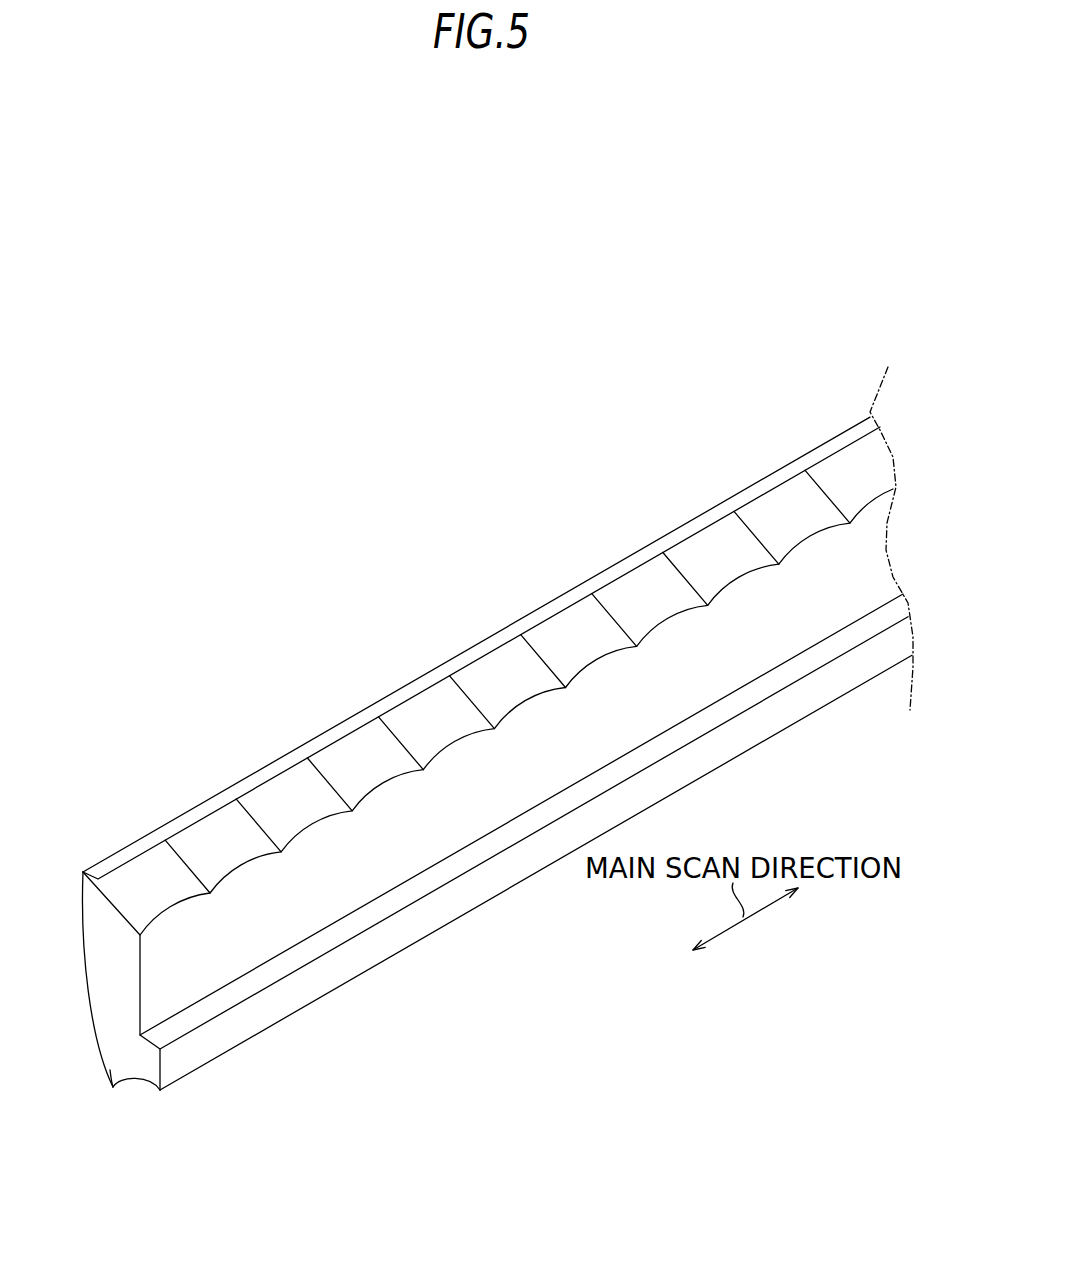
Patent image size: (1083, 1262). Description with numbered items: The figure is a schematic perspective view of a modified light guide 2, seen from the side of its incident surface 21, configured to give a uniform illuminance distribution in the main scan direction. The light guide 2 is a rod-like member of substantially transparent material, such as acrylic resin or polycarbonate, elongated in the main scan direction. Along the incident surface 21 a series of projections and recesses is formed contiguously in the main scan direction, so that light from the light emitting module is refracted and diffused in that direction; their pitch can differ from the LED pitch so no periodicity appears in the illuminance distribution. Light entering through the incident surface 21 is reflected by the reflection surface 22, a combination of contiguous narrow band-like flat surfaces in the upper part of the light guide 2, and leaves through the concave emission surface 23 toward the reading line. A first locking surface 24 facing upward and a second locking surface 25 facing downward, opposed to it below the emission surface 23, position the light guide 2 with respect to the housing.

The light guide 2 is at (153, 650).
The incident surface 21 is at (440, 725).
The reflection surface 22 is at (74, 951).
The emission surface 23 is at (137, 1083).
The first locking surface 24 is at (112, 1089).
The second locking surface 25 is at (610, 778).